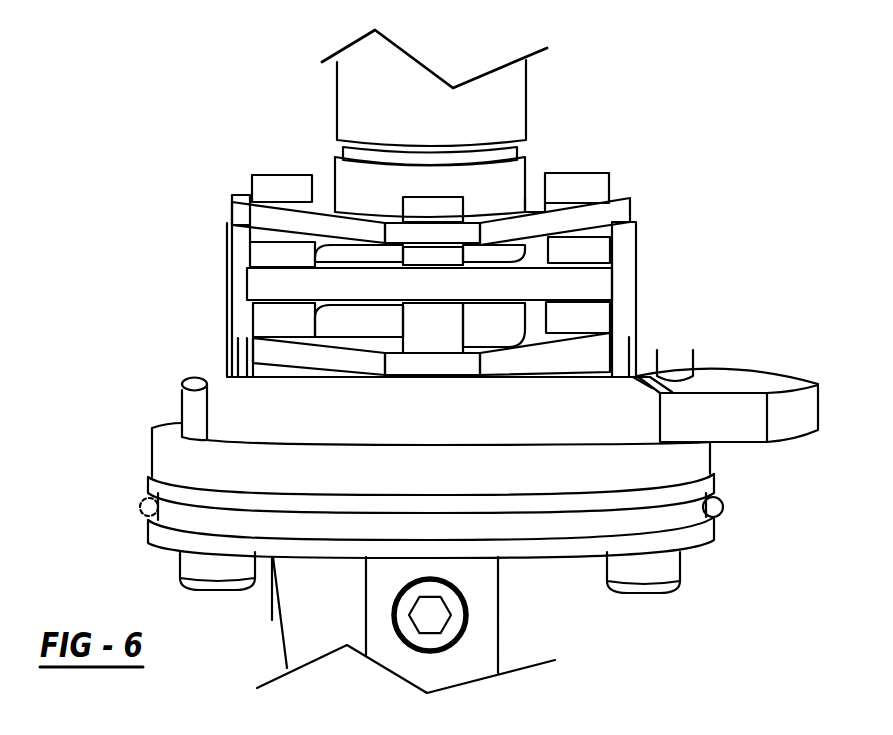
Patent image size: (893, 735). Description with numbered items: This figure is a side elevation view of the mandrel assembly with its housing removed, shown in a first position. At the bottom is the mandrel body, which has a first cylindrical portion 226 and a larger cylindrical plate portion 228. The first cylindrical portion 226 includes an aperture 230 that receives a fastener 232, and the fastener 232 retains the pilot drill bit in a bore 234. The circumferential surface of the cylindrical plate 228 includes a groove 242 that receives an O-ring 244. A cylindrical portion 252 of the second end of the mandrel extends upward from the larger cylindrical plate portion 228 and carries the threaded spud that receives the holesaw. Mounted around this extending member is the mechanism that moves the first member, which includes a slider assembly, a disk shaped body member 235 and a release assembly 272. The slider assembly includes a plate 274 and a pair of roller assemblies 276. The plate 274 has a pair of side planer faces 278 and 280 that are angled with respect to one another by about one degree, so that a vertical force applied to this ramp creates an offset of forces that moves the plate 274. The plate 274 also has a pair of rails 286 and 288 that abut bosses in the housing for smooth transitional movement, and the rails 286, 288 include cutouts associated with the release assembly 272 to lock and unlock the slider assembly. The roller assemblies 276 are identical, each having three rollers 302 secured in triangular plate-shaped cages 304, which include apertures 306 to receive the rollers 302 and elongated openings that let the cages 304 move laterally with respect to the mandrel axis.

The cylindrical portion 252 is at (520, 107).
The rollers 302 is at (277, 180).
The apertures 306 is at (268, 198).
The cages 304 is at (250, 212).
The rail 288 is at (240, 255).
The side planer face 278 is at (312, 258).
The side planer face 280 is at (283, 303).
The roller assemblies 276 is at (640, 193).
The rail 286 is at (630, 251).
The plate 274 is at (655, 285).
The bore 234 is at (698, 380).
The release assembly 272 is at (830, 392).
The disk shaped body member 235 is at (697, 458).
The cylindrical plate portion 228 is at (152, 528).
The groove 242 is at (150, 500).
The O-ring 244 is at (715, 513).
The first cylindrical portion 226 is at (325, 607).
The aperture 230 is at (453, 618).
The fastener 232 is at (440, 632).